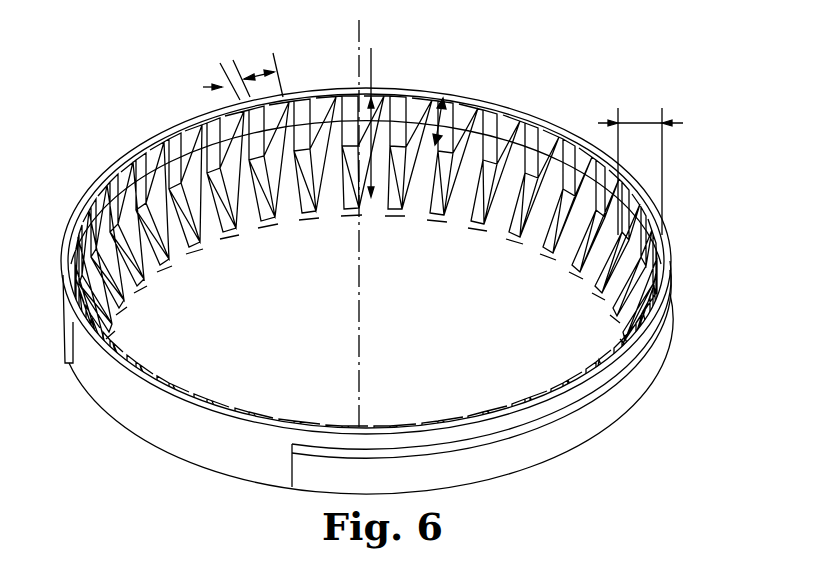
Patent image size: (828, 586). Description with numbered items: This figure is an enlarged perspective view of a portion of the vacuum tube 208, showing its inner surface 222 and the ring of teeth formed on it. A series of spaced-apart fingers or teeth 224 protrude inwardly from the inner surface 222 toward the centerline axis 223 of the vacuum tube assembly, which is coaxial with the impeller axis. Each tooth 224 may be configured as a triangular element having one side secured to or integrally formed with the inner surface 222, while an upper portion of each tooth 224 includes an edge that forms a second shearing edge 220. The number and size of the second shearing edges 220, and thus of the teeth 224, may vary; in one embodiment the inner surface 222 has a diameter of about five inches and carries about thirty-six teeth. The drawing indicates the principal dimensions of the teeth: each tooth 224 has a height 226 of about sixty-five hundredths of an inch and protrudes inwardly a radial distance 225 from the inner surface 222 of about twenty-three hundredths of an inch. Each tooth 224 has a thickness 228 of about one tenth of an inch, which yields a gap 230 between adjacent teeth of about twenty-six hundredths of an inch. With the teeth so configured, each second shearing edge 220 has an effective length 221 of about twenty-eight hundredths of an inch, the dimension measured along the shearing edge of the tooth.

The vacuum tube 208 is at (497, 110).
The second shearing edge 220 is at (207, 110).
The effective length 221 is at (440, 97).
The inner surface 222 is at (490, 256).
The centerline axis 223 is at (359, 365).
The teeth 224 is at (366, 281).
The radial distance 225 is at (636, 123).
The height 226 is at (371, 66).
The thickness 228 is at (203, 87).
The gap 230 is at (258, 68).